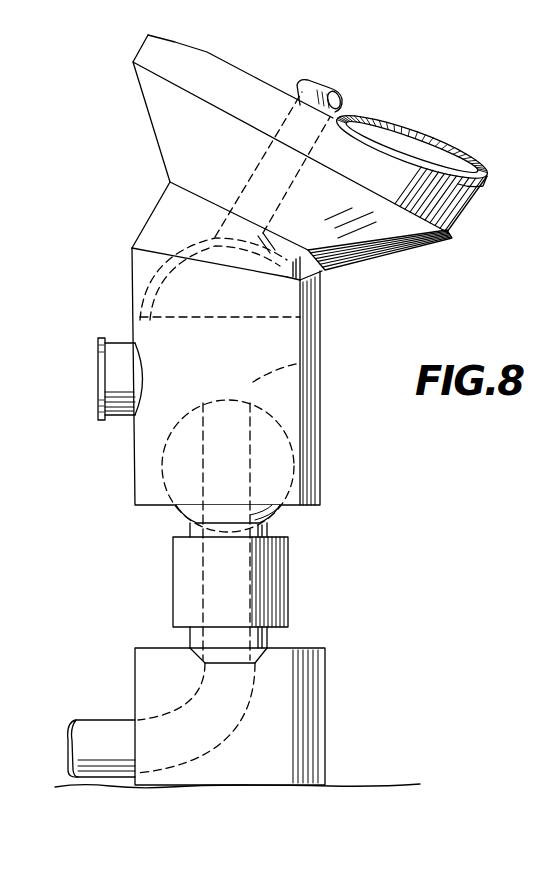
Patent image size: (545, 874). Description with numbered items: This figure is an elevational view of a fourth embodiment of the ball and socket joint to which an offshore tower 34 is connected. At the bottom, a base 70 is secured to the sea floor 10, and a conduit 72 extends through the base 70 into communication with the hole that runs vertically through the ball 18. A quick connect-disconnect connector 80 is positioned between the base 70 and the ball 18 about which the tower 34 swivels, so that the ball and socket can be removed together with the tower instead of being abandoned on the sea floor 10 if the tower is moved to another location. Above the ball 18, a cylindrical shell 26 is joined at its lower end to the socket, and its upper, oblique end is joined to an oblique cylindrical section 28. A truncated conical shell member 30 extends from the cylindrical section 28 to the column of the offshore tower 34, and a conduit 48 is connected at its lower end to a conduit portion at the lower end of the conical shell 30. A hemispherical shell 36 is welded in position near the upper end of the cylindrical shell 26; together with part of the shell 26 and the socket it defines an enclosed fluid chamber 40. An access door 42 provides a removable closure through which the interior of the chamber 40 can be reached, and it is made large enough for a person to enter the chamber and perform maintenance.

The sea floor 10 is at (370, 785).
The ball 18 is at (177, 515).
The cylindrical shell 26 is at (135, 453).
The oblique cylindrical section 28 is at (165, 212).
The truncated conical shell member 30 is at (392, 255).
The offshore tower 34 is at (481, 212).
The hemispherical shell 36 is at (158, 265).
The fluid chamber 40 is at (300, 363).
The access door 42 is at (98, 375).
The conduit 48 is at (303, 87).
The base 70 is at (320, 697).
The conduit 72 is at (95, 720).
The quick connect-disconnect connector 80 is at (285, 588).